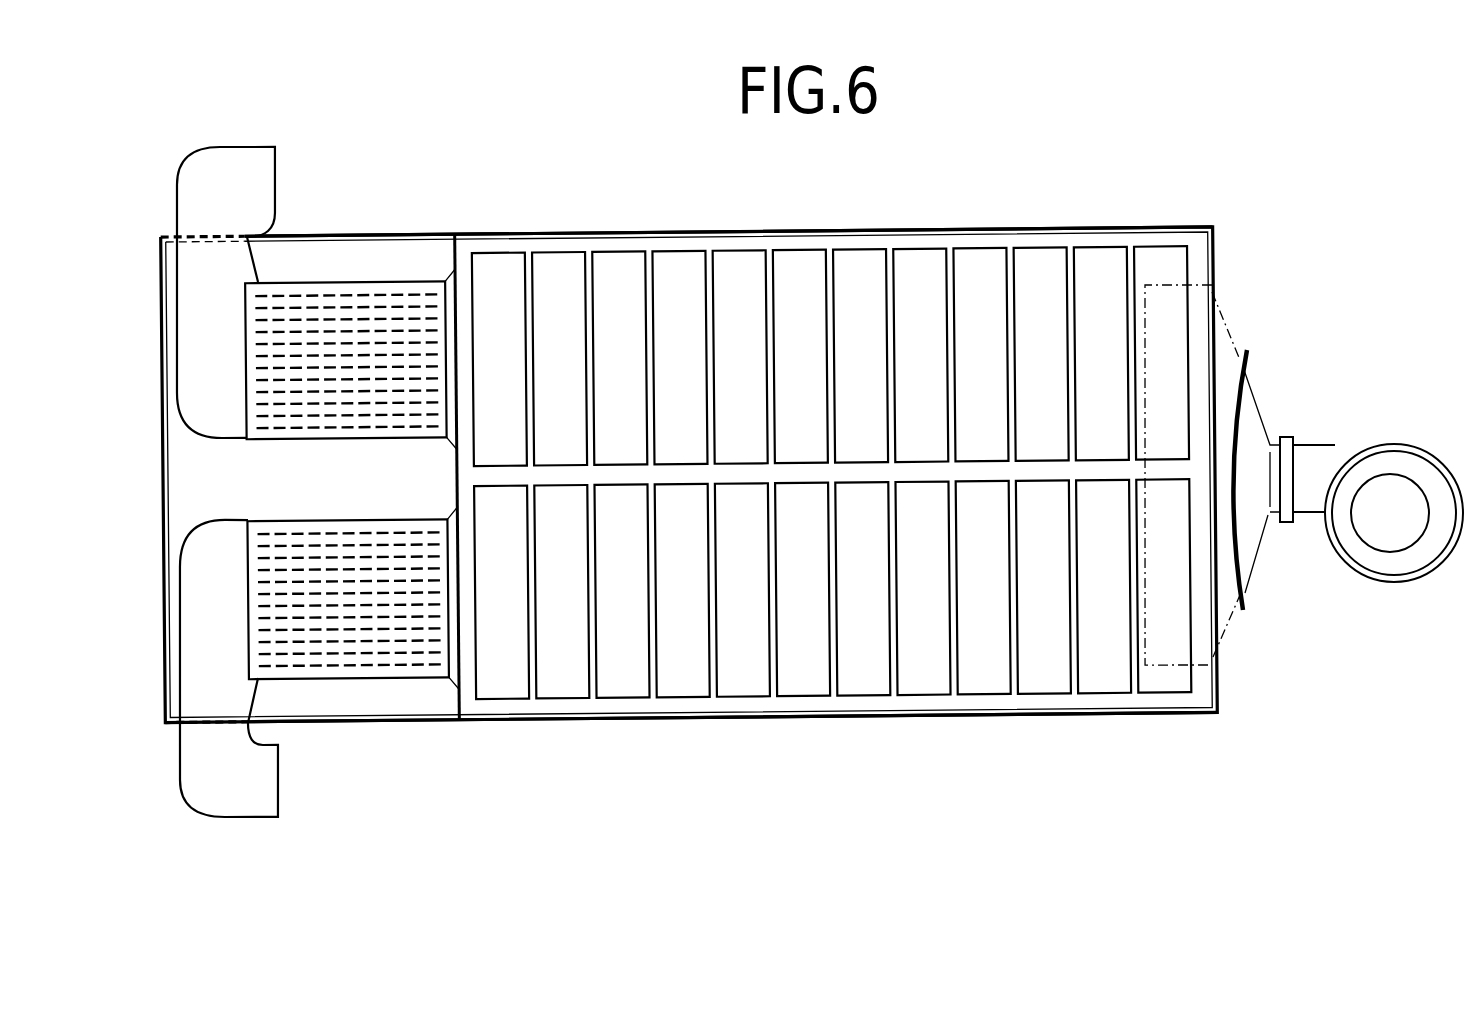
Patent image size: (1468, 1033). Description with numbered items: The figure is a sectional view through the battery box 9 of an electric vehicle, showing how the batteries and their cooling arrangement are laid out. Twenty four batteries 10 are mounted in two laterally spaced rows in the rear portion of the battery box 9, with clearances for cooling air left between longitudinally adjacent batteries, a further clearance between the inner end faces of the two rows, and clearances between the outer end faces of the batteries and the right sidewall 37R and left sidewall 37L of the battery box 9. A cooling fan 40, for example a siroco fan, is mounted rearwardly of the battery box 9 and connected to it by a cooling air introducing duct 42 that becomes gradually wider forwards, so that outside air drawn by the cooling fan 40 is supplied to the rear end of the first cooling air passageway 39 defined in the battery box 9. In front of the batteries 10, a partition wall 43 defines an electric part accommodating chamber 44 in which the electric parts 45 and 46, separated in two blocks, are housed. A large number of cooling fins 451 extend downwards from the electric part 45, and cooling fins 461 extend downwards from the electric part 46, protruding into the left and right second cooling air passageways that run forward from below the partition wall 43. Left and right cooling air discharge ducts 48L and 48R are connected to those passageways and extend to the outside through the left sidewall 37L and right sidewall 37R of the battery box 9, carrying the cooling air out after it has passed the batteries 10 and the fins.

The battery box 9 is at (1022, 226).
The batteries 10 is at (1117, 599).
The right sidewall 37R is at (881, 225).
The left sidewall 37L is at (802, 720).
The first cooling air passageway 39 is at (878, 475).
The cooling fan 40 is at (1352, 573).
The cooling air introducing duct 42 is at (1253, 415).
The partition wall 43 is at (458, 483).
The electric part accommodating chamber 44 is at (230, 494).
The electric part 45 is at (374, 680).
The cooling fins 451 is at (350, 543).
The electric part 46 is at (402, 283).
The cooling fins 461 is at (313, 408).
The right cooling air discharge duct 48R is at (251, 178).
The left cooling air discharge duct 48L is at (263, 794).